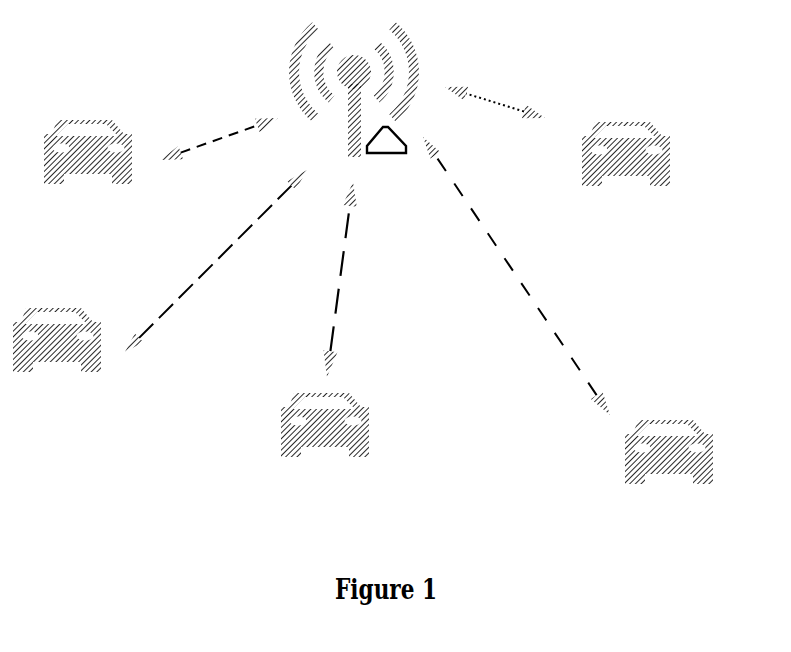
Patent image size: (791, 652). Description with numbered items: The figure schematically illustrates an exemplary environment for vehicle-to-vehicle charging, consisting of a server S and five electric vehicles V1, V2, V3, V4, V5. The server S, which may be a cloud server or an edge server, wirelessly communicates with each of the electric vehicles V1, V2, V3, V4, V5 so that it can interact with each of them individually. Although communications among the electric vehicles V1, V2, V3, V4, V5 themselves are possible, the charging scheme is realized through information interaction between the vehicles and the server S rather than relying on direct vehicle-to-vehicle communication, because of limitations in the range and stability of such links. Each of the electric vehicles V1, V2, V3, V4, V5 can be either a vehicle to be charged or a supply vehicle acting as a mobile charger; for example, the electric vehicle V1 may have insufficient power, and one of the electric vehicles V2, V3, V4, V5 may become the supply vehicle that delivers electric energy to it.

The server S is at (354, 78).
The electric vehicle V1 is at (88, 173).
The electric vehicle V2 is at (57, 361).
The electric vehicle V3 is at (325, 450).
The electric vehicle V4 is at (669, 474).
The electric vehicle V5 is at (626, 175).